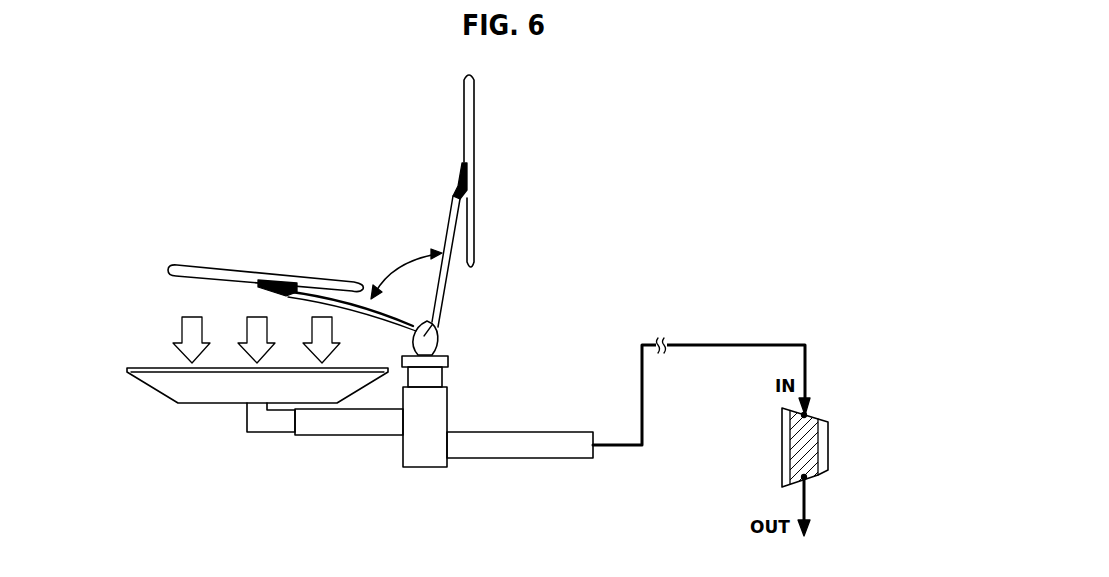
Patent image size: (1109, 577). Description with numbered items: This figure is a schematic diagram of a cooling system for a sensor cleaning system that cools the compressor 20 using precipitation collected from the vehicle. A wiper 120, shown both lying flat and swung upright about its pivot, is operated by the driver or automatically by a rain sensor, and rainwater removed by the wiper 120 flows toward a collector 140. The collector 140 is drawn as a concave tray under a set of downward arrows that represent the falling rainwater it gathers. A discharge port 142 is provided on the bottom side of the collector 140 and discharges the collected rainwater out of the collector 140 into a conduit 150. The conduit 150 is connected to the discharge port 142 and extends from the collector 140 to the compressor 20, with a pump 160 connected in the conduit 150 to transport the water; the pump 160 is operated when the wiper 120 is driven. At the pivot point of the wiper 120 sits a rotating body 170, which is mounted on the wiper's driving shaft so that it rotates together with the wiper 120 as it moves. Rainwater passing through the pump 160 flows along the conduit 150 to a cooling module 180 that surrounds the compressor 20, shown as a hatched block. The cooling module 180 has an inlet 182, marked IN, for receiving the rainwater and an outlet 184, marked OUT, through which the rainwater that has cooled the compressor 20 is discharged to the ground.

The compressor 20 is at (828, 448).
The wiper 120 is at (468, 122).
The collector 140 is at (168, 388).
The discharge port 142 is at (262, 423).
The conduit 150 is at (338, 423).
The pump 160 is at (440, 402).
The rotating body 170 is at (428, 339).
The cooling module 180 is at (798, 445).
The inlet 182 is at (806, 413).
The outlet 184 is at (806, 479).